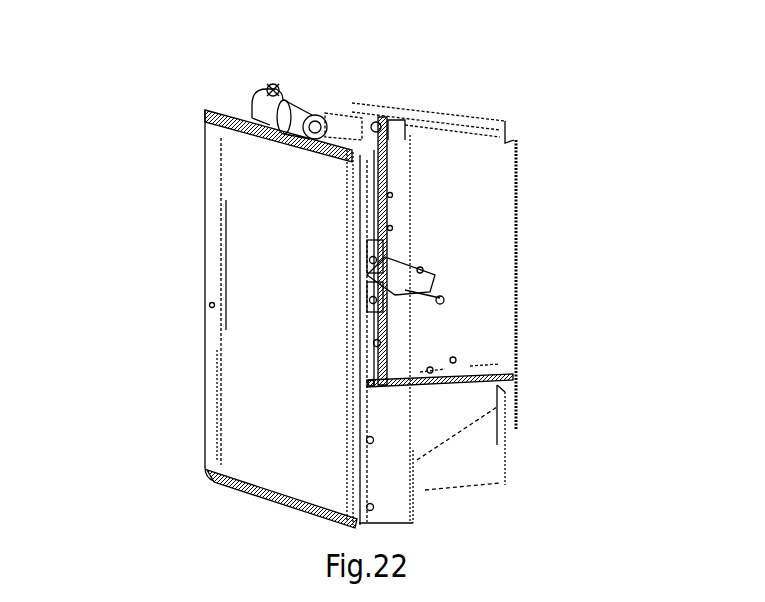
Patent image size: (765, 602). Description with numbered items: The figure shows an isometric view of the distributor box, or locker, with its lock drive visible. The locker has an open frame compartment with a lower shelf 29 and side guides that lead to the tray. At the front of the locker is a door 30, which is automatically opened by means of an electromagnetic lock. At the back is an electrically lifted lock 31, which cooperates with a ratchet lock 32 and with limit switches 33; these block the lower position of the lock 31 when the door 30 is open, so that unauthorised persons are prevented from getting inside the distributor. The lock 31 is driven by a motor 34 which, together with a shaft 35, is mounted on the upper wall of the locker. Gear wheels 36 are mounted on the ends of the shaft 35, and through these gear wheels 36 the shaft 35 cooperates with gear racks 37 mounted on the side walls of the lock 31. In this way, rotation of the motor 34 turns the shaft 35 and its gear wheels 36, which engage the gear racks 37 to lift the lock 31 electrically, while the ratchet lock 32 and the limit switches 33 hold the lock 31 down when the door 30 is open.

The lower shelf 29 is at (400, 442).
The door 30 is at (305, 377).
The lock 31 is at (490, 240).
The ratchet lock 32 is at (409, 287).
The limit switches 33 is at (480, 378).
The motor 34 is at (272, 122).
The shaft 35 is at (327, 110).
The gear wheels 36 is at (386, 124).
The gear racks 37 is at (399, 213).